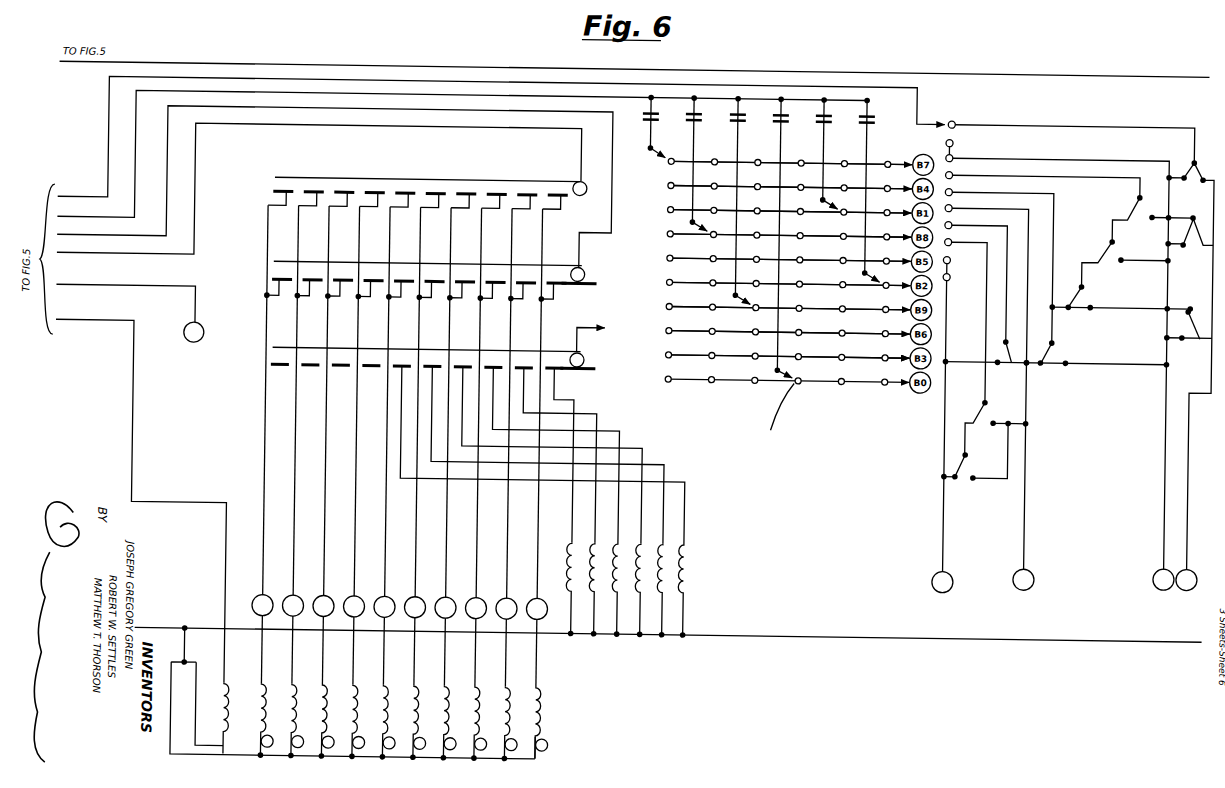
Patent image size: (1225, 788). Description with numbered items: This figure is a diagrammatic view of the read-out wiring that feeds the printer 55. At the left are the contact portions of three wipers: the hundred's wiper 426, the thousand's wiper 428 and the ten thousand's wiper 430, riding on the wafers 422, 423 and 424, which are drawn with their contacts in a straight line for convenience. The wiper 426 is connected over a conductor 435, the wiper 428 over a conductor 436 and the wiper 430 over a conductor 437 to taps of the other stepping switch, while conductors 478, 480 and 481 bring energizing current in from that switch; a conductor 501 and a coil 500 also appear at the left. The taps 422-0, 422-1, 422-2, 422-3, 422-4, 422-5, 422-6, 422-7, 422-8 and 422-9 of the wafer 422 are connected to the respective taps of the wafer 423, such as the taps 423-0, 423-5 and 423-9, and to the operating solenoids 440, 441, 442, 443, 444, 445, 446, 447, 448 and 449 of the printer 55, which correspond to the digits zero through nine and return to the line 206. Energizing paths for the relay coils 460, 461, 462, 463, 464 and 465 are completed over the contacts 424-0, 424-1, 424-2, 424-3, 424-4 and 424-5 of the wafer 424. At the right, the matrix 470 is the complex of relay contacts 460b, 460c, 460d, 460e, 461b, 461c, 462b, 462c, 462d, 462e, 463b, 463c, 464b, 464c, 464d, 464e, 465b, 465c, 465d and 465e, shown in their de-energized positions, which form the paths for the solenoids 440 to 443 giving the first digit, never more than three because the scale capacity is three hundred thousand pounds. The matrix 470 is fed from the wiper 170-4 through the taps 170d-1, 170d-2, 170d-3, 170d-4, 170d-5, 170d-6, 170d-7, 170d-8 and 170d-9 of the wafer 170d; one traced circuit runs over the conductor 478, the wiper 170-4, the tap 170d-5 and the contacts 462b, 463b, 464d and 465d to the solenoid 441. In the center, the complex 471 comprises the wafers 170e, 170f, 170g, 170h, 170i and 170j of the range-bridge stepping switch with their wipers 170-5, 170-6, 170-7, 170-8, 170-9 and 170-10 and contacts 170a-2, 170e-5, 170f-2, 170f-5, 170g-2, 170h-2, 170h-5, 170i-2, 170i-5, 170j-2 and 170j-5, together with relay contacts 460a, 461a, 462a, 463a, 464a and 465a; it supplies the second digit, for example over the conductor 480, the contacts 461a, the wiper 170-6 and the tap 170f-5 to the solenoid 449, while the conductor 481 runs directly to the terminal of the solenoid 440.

The conductor 478 is at (78, 196).
The conductor 480 is at (70, 224).
The conductor 436 is at (85, 242).
The conductor 435 is at (85, 260).
The conductor 481 is at (78, 292).
The lead to FIG. 5 501 is at (78, 327).
The wafer 422 is at (270, 177).
The tap 422-0 is at (549, 194).
The tap 422-1 is at (518, 194).
The tap 422-2 is at (488, 194).
The tap 422-3 is at (457, 194).
The tap 422-4 is at (426, 194).
The tap 422-5 is at (396, 194).
The tap 422-6 is at (365, 194).
The tap 422-7 is at (335, 194).
The tap 422-8 is at (304, 194).
The tap 422-9 is at (274, 194).
The wafer 423 is at (268, 267).
The tap 423-0 is at (552, 287).
The tap 423-5 is at (402, 283).
The tap 423-9 is at (272, 284).
The ten thousand's wafer 424 is at (268, 364).
The contact 424-0 is at (561, 372).
The contact 424-1 is at (523, 367).
The contact 424-2 is at (492, 367).
The contact 424-3 is at (462, 367).
The contact 424-4 is at (432, 367).
The contact 424-5 is at (401, 367).
The wiper 426 is at (582, 182).
The wiper 428 is at (583, 274).
The wiper 430 is at (584, 360).
The conductor 437 is at (594, 327).
The capacitor 460a is at (640, 117).
The contacts 461a is at (682, 117).
The capacitor 462a is at (726, 117).
The capacitor 463a is at (769, 117).
The capacitor 464a is at (812, 117).
The capacitor 465a is at (855, 117).
The wiper 170-4 is at (924, 116).
The wiper 170-5 is at (686, 137).
The wiper 170-6 is at (735, 222).
The wiper 170-7 is at (755, 296).
The wiper 170-8 is at (816, 369).
The wiper 170-9 is at (845, 201).
The wiper 170-10 is at (889, 274).
The switch contact 170a-2 is at (660, 178).
The switch contact 170e-5 is at (669, 275).
The switch contact 170f-2 is at (708, 236).
The tap 170f-5 is at (700, 299).
The switch contact 170g-2 is at (753, 309).
The switch contact 170h-5 is at (812, 205).
The switch contact lead 170h-2 is at (790, 442).
The switch contact 170i-2 is at (839, 213).
The switch contact 170i-5 is at (836, 300).
The switch contact 170j-2 is at (884, 286).
The switch contact 170j-5 is at (883, 355).
The switch section 170e is at (668, 384).
The wafer 170f is at (711, 384).
The switch section 170g is at (755, 384).
The switch section 170h is at (798, 384).
The wafer 170i is at (841, 384).
The wafer 170j is at (884, 384).
The wafer 170d is at (983, 107).
The switch contact 170d-1 is at (954, 284).
The switch contact 170d-2 is at (976, 115).
The switch contact 170d-3 is at (966, 130).
The switch contact 170d-4 is at (966, 146).
The tap 170d-5 is at (966, 163).
The switch contact 170d-6 is at (966, 180).
The switch contact 170d-7 is at (966, 196).
The switch contact 170d-8 is at (966, 213).
The switch contact 170d-9 is at (966, 230).
The relay contact 460b is at (1000, 362).
The relay contact 460c is at (1022, 365).
The relay contact 460d is at (1183, 166).
The relay contact 460e is at (1196, 166).
The contacts 461b is at (1182, 241).
The relay contact 461c is at (1196, 236).
The contacts 462b is at (1118, 212).
The relay contact 462c is at (1149, 214).
The relay contact 462d is at (1182, 334).
The relay contact 462e is at (1198, 327).
The contacts 463b is at (1092, 248).
The relay contact 463c is at (1119, 257).
The relay contact 464b is at (977, 410).
The relay contact 464c is at (993, 421).
The contacts 464d is at (1072, 302).
The relay contact 464e is at (1090, 300).
The relay contact 465b is at (958, 474).
The relay contact 465c is at (974, 476).
The contacts 465d is at (1044, 362).
The relay contact 465e is at (1067, 357).
The matrix 470 is at (1101, 459).
The complex 471 is at (820, 441).
The relay coil 460 is at (572, 545).
The relay coil 461 is at (596, 545).
The relay coil 462 is at (619, 545).
The relay coil 463 is at (642, 545).
The relay coil 464 is at (664, 545).
The relay coil 465 is at (685, 545).
The operating solenoid 440 is at (544, 692).
The operating solenoid 441 is at (513, 690).
The operating solenoid 442 is at (483, 690).
The operating solenoid 443 is at (452, 690).
The operating solenoid 444 is at (422, 690).
The operating solenoid 445 is at (391, 690).
The operating solenoid 446 is at (361, 690).
The operating solenoid 447 is at (331, 690).
The operating solenoid 448 is at (300, 690).
The operating solenoid 449 is at (270, 690).
The relay coil 500 is at (232, 690).
The line 206 is at (211, 632).
The printer 55 is at (570, 710).